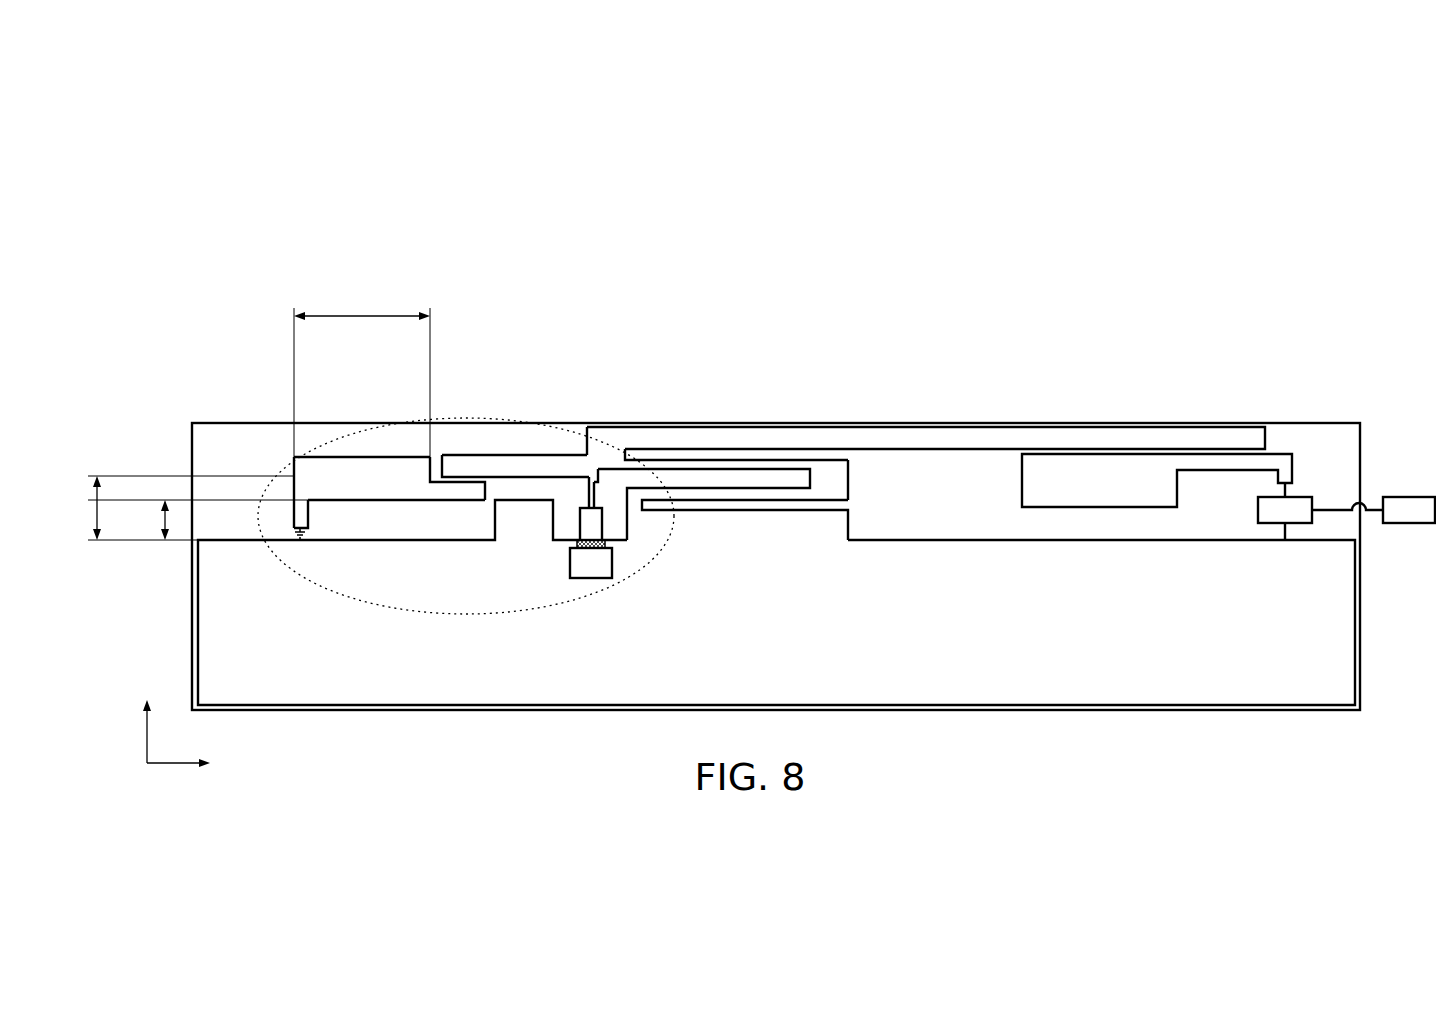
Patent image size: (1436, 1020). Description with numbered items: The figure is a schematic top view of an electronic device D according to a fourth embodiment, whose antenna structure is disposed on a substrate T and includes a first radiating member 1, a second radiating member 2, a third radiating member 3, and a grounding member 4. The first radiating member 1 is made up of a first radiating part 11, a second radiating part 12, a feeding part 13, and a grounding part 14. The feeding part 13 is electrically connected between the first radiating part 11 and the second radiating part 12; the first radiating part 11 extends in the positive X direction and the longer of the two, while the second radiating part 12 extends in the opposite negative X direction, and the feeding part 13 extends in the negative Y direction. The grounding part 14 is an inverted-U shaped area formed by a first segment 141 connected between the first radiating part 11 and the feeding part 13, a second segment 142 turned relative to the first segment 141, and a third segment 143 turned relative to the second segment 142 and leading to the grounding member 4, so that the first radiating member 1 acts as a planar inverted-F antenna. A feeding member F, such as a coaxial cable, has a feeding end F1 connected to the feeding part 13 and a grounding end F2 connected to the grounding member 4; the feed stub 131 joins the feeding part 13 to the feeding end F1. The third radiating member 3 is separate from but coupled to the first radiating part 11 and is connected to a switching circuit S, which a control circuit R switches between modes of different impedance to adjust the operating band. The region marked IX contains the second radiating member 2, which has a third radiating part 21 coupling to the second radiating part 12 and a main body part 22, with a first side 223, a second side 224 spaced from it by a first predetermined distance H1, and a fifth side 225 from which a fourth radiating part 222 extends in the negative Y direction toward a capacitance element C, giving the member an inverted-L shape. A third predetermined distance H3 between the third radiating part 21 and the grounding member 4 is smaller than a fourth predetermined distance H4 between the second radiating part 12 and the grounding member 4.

The first radiating member 1 is at (110, 245).
The first radiating part 11 is at (958, 440).
The second radiating part 12 is at (571, 467).
The feeding part 13 is at (603, 465).
The grounding part 14 is at (758, 474).
The first segment 141 is at (668, 458).
The second segment 142 is at (832, 480).
The third segment 143 is at (755, 493).
The second radiating member 2 is at (114, 335).
The third radiating part 21 is at (483, 455).
The main body part 22 is at (393, 465).
The fourth radiating part 222 is at (303, 517).
The first side 223 is at (472, 488).
The second side 224 is at (293, 466).
The fifth side 225 is at (420, 500).
The feed stub 131 is at (587, 483).
The third radiating member 3 is at (1014, 484).
The grounding member 4 is at (1022, 688).
The capacitance element C is at (297, 540).
The electronic device D is at (1156, 229).
The feeding member F is at (588, 588).
The feeding end F1 is at (596, 492).
The grounding end F2 is at (606, 545).
The switching circuit S is at (1306, 491).
The control circuit R is at (1408, 489).
The substrate T is at (1297, 416).
The part IX is at (345, 418).
The first predetermined distance H1 is at (362, 370).
The third predetermined distance H3 is at (198, 520).
The fourth predetermined distance H4 is at (179, 508).
The X direction X is at (194, 770).
The Y direction Y is at (147, 712).